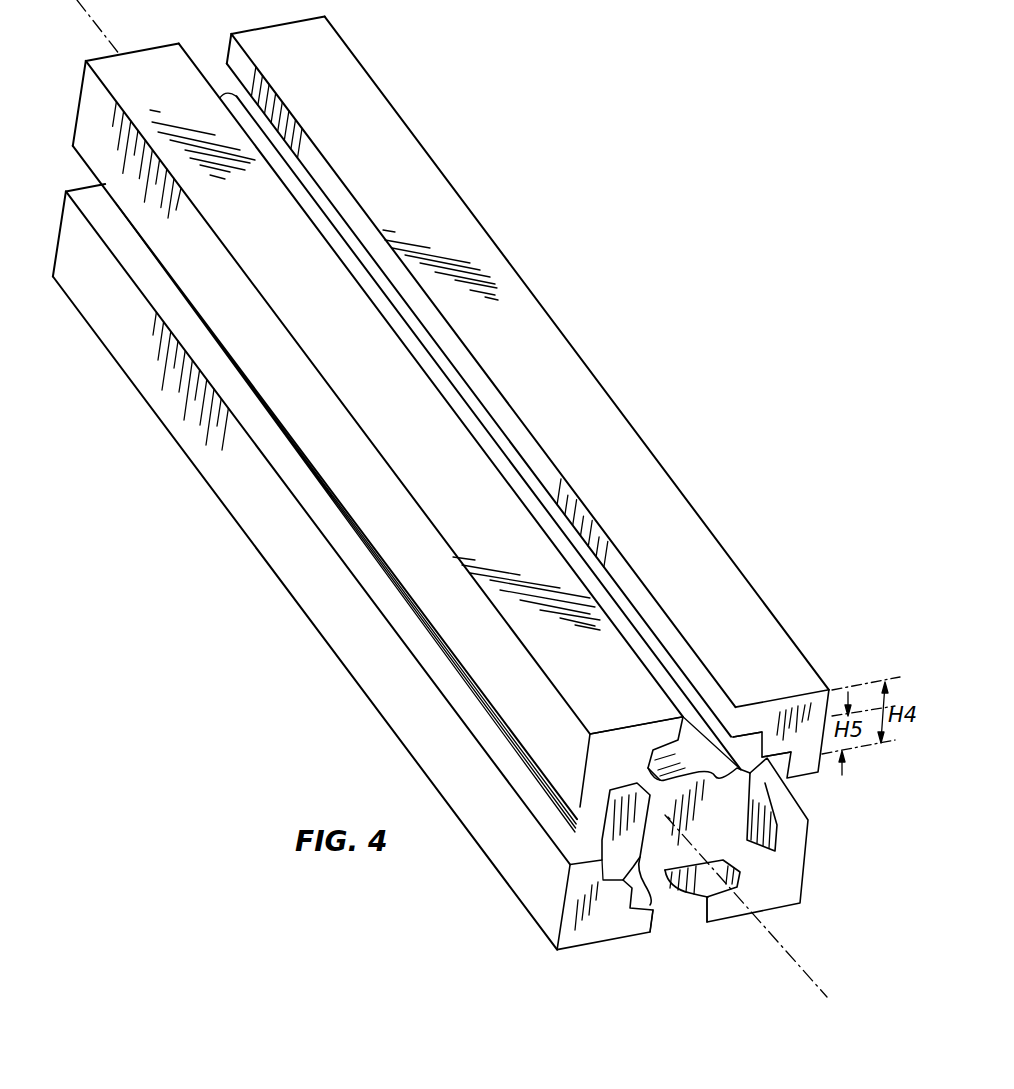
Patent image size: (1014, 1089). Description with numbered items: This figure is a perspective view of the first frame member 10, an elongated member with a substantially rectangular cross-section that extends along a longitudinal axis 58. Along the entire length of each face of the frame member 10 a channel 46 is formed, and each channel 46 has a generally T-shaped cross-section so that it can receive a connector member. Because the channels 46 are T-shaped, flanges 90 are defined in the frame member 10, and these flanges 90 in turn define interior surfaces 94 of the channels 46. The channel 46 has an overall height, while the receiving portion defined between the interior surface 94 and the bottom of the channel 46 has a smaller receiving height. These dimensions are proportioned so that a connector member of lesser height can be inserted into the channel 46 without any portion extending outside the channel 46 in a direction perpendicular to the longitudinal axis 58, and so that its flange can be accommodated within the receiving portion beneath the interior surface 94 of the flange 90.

The first frame member 10 is at (638, 332).
The channel 46 is at (665, 690).
The longitudinal axis 58 is at (798, 957).
The flange 90 is at (748, 720).
The interior surface 94 is at (733, 734).